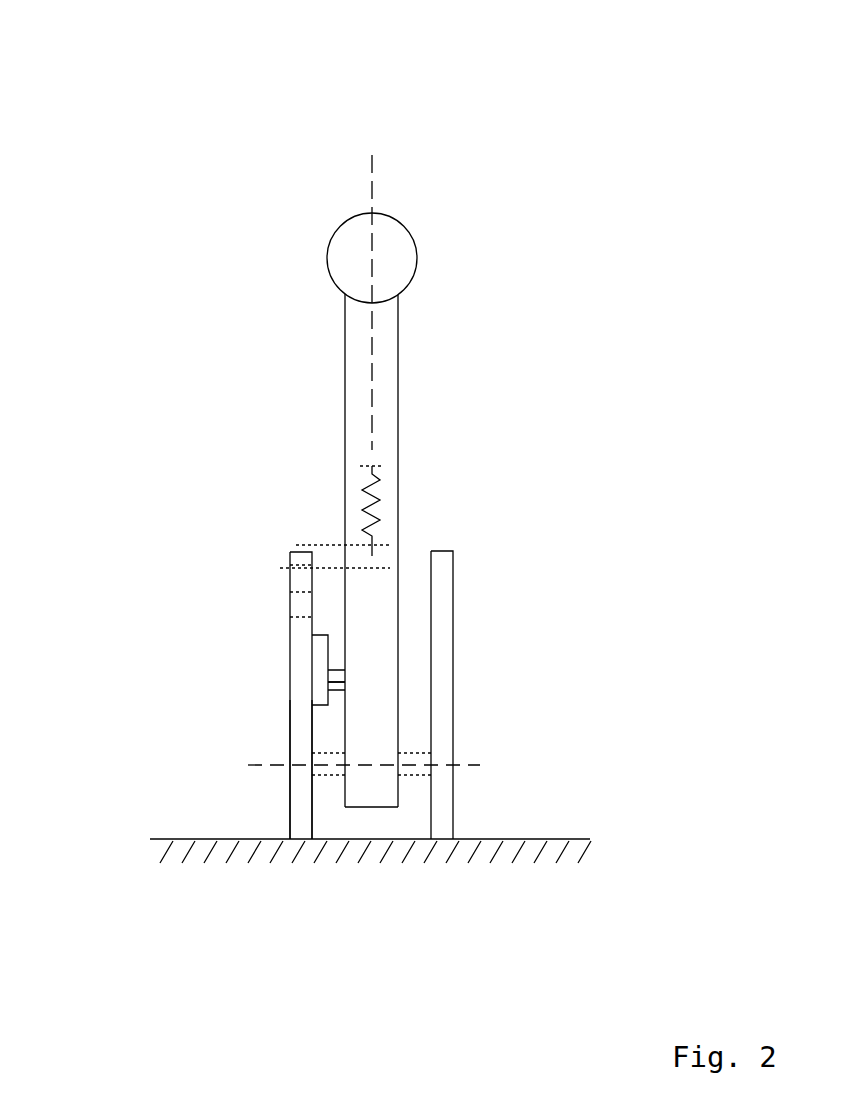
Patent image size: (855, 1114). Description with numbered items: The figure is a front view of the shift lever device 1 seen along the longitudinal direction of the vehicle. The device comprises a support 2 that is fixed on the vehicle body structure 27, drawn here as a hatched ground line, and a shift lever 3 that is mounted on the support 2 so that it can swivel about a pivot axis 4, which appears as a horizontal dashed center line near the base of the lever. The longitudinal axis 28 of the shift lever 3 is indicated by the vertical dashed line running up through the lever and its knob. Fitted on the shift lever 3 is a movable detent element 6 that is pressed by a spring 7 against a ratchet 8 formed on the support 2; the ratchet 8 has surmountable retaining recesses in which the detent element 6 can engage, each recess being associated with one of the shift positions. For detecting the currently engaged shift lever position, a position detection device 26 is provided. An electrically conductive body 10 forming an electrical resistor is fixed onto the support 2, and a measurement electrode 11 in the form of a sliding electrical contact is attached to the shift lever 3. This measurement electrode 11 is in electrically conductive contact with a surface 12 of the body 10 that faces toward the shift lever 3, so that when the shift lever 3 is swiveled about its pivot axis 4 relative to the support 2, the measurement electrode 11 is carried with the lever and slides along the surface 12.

The shift lever device 1 is at (86, 88).
The support 2 is at (296, 802).
The shift lever 3 is at (398, 328).
The pivot axis 4 is at (494, 766).
The detent element 6 is at (330, 552).
The spring 7 is at (366, 484).
The ratchet 8 is at (296, 576).
The body 10 is at (320, 648).
The measurement electrode 11 is at (338, 670).
The surface of the body 12 is at (344, 688).
The position detection device 26 is at (332, 712).
The vehicle body structure 27 is at (560, 838).
The longitudinal axis 28 is at (372, 366).